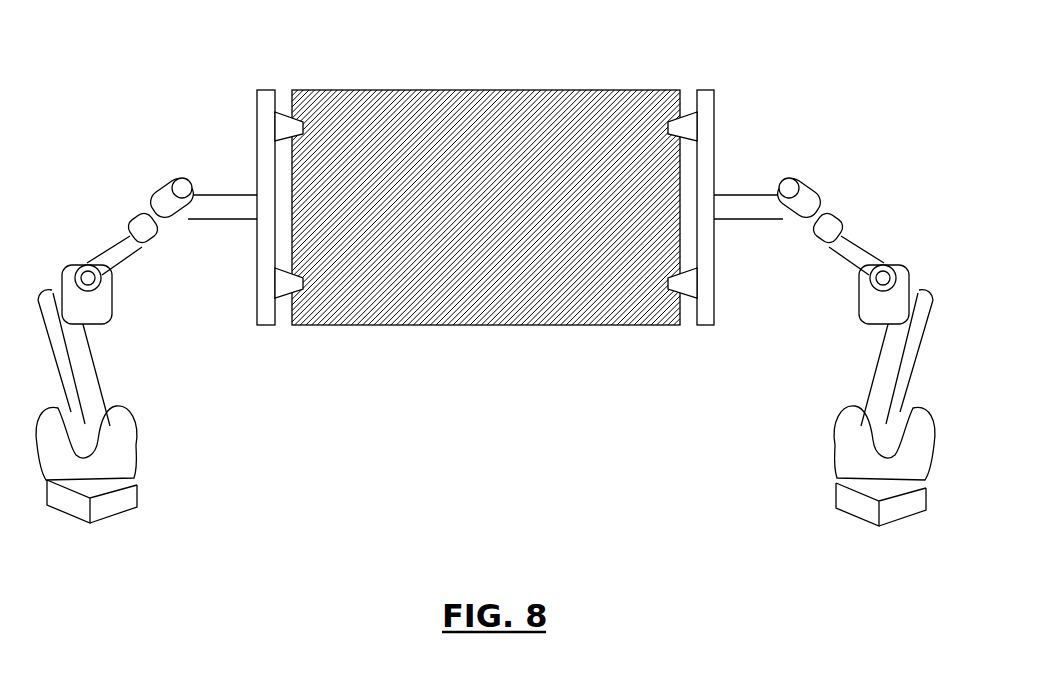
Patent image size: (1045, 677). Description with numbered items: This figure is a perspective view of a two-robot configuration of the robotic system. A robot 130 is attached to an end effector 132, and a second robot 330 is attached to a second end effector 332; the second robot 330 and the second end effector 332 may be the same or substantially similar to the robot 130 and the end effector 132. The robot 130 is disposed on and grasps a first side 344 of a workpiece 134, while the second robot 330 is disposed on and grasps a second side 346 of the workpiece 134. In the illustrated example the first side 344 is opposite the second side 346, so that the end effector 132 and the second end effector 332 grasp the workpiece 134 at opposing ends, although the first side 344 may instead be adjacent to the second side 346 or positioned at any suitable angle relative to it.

The robot 130 is at (141, 452).
The end effector 132 is at (255, 132).
The workpiece 134 is at (469, 83).
The second robot 330 is at (831, 431).
The second end effector 332 is at (720, 109).
The first side 344 is at (291, 108).
The second side 346 is at (681, 108).